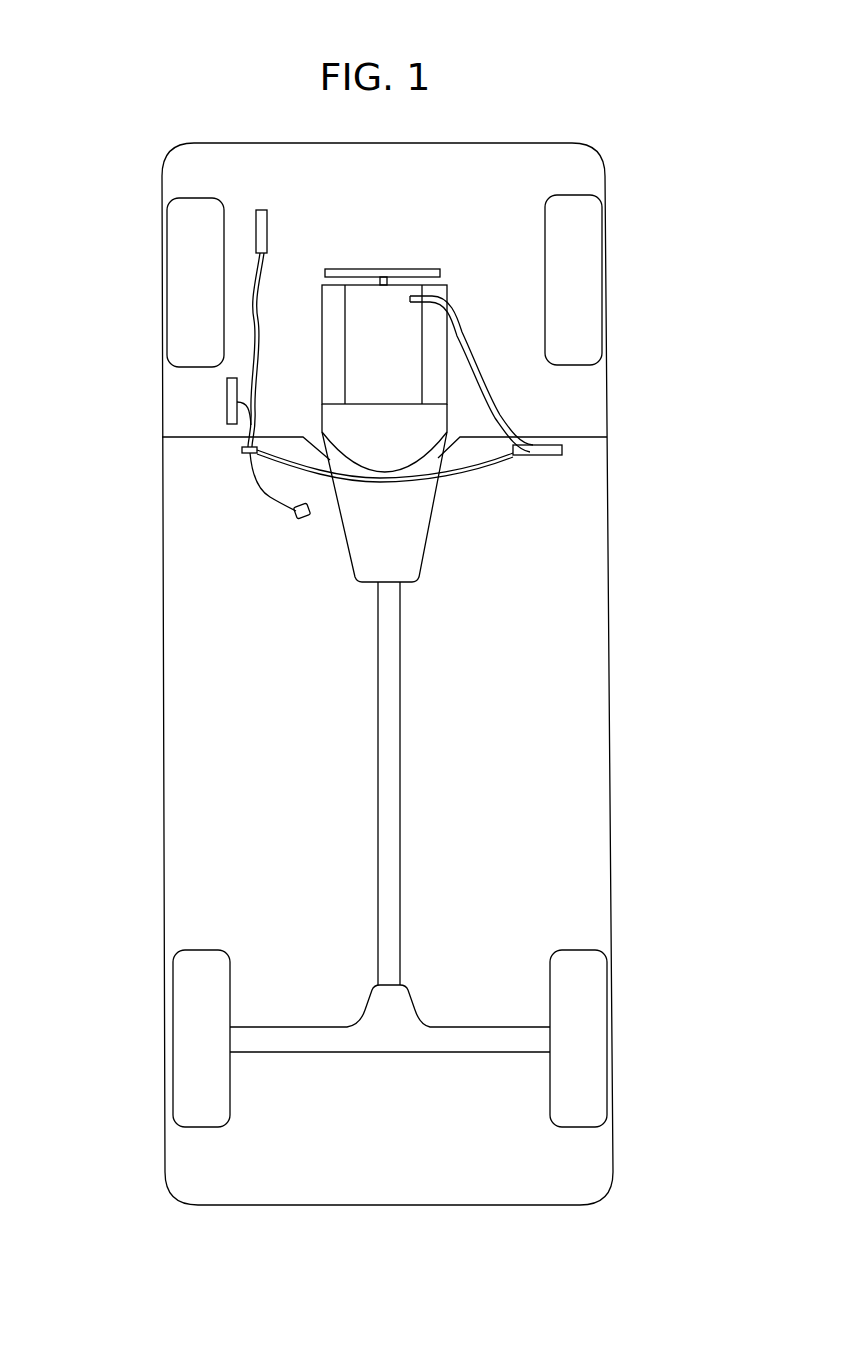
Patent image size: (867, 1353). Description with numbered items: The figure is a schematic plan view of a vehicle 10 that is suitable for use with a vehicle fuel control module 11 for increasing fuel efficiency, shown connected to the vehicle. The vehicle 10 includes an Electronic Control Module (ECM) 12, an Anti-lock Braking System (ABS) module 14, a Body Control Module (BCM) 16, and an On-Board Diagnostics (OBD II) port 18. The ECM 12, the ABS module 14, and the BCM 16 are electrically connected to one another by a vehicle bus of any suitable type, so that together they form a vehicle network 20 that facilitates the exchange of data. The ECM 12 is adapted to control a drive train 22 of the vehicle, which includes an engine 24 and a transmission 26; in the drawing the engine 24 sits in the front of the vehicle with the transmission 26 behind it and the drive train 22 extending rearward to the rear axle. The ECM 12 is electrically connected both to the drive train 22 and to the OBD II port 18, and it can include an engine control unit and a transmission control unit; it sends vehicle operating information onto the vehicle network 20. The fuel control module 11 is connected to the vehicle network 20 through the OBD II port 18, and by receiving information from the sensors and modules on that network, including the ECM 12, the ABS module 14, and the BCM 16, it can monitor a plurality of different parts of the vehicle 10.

The vehicle 10 is at (137, 198).
The vehicle fuel control module 11 is at (295, 517).
The Electronic Control Module 12 is at (562, 452).
The Anti-lock Braking System module 14 is at (227, 401).
The Body Control Module 16 is at (267, 210).
The On-Board Diagnostics port 18 is at (242, 450).
The vehicle network 20 is at (252, 360).
The drive train 22 is at (375, 623).
The engine 24 is at (443, 287).
The transmission 26 is at (415, 548).